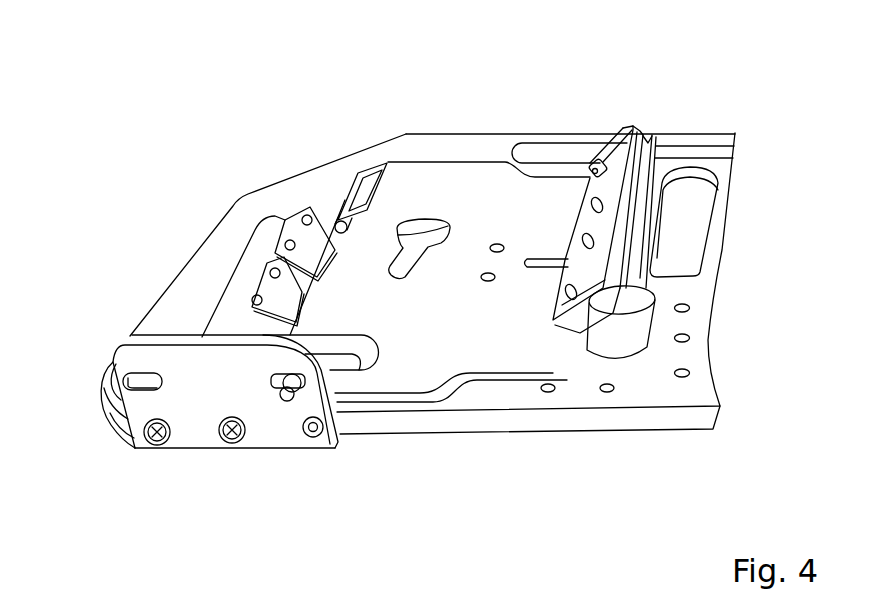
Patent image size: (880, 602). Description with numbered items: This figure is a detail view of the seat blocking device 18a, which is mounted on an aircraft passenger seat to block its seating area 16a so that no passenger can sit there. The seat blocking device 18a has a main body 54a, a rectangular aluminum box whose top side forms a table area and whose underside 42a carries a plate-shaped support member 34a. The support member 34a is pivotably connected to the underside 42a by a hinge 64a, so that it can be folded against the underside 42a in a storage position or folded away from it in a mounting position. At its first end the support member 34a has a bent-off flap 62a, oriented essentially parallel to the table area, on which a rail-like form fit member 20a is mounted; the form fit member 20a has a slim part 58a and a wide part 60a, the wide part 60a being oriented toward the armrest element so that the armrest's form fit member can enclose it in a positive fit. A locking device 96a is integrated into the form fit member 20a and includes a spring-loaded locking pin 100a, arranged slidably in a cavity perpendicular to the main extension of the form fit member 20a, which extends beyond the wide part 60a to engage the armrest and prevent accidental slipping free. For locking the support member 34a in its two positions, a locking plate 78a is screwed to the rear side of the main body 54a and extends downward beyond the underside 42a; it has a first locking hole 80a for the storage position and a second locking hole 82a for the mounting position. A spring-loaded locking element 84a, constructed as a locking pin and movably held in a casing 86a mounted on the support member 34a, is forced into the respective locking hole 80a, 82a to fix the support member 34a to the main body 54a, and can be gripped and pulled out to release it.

The seating area 16a is at (190, 462).
The seat blocking device 18a is at (481, 112).
The form fit member 20a is at (540, 282).
The support member 34a is at (465, 328).
The underside 42a is at (689, 289).
The main body 54a is at (667, 414).
The slim part 58a is at (646, 218).
The wide part 60a is at (594, 220).
The bent-off flap 62a is at (572, 362).
The hinge 64a is at (373, 164).
The locking plate 78a is at (200, 367).
The first locking hole 80a is at (266, 389).
The second locking hole 82a is at (116, 384).
The locking element 84a is at (284, 400).
The casing 86a is at (346, 372).
The locking device 96a is at (605, 122).
The locking pin 100a is at (593, 158).